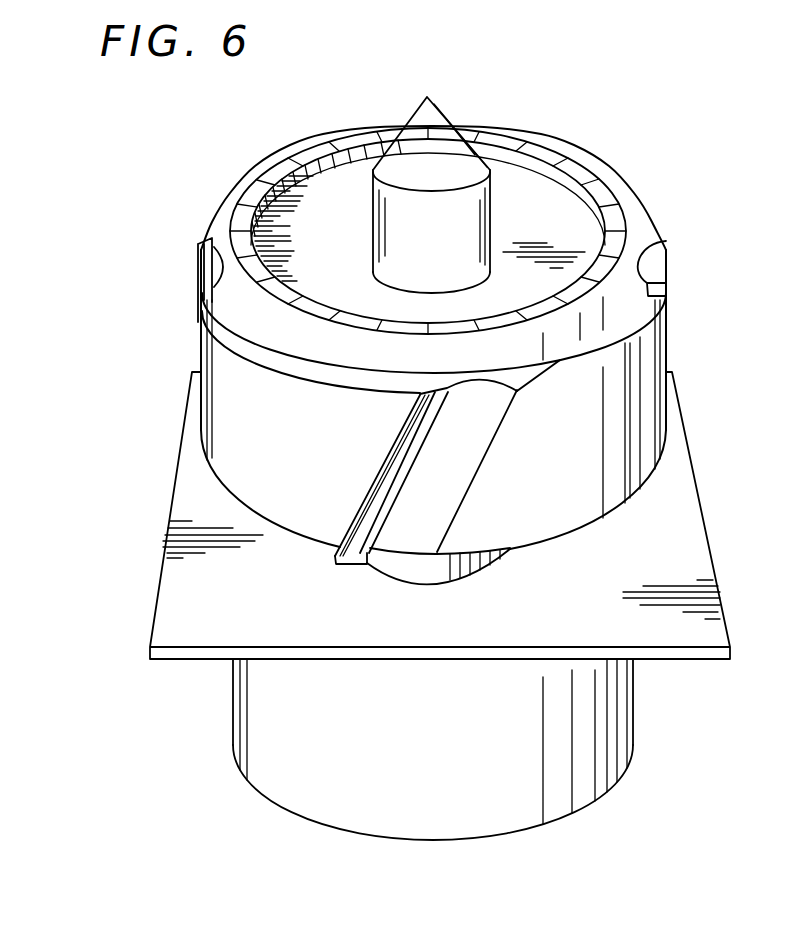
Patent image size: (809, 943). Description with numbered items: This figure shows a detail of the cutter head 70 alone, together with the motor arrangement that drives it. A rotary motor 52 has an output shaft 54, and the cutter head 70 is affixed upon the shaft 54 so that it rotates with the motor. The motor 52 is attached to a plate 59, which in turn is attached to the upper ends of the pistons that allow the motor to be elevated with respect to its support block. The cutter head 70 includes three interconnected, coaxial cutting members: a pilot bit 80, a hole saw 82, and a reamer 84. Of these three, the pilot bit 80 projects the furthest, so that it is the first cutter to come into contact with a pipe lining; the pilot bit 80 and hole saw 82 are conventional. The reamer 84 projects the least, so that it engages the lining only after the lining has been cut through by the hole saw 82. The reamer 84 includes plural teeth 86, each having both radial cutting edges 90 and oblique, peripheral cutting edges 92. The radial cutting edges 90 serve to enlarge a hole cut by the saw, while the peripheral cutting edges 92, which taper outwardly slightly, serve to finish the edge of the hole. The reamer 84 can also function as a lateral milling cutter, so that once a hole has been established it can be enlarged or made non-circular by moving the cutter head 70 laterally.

The rotary motor 52 is at (446, 765).
The output shaft 54 is at (413, 565).
The plate 59 is at (672, 517).
The cutter head 70 is at (160, 350).
The pilot bit 80 is at (436, 106).
The hole saw 82 is at (568, 155).
The reamer 84 is at (667, 287).
The teeth 86 is at (403, 472).
The radial cutting edges 90 is at (197, 266).
The oblique peripheral cutting edges 92 is at (199, 285).